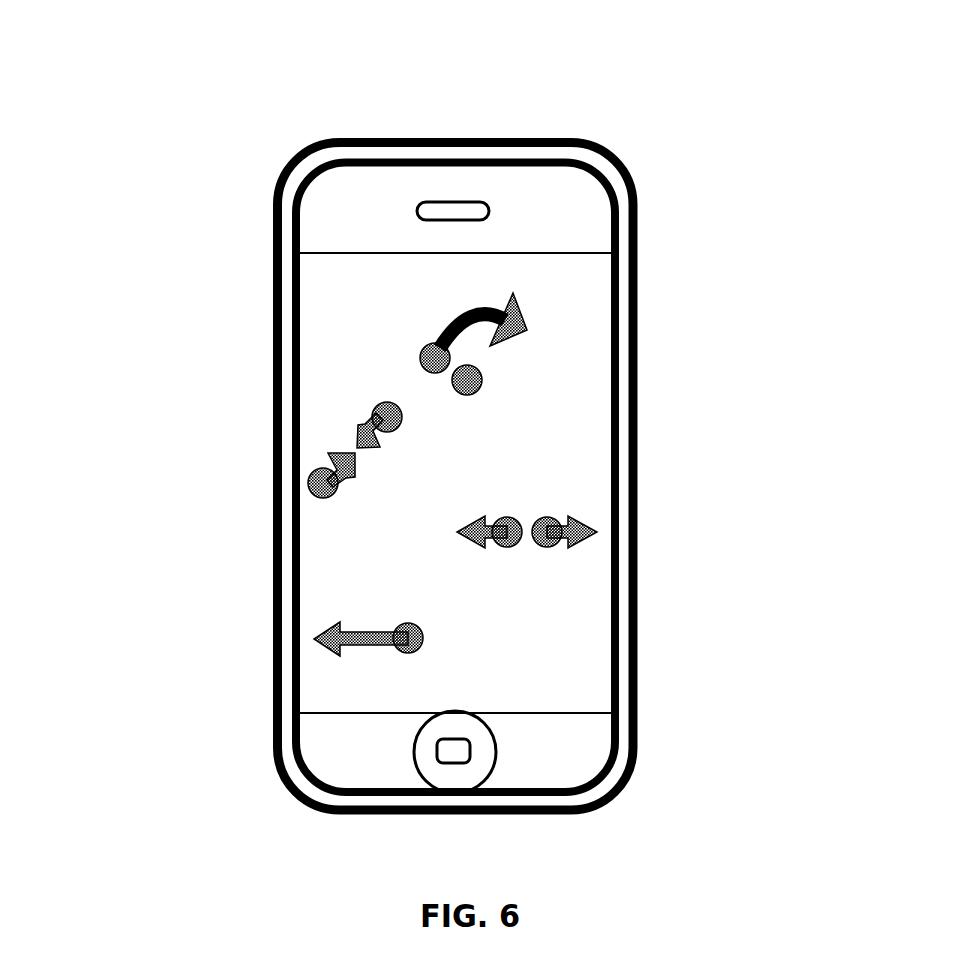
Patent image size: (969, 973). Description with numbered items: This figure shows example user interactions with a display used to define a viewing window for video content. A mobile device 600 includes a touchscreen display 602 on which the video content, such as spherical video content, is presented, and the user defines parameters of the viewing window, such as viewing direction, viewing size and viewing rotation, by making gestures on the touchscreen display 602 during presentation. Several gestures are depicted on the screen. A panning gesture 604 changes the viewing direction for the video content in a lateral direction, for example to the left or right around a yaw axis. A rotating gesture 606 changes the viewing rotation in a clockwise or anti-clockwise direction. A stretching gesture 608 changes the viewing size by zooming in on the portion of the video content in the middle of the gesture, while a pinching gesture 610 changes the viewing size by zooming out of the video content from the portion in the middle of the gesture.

The mobile device 600 is at (567, 43).
The touchscreen display 602 is at (330, 297).
The panning gesture 604 is at (350, 636).
The rotating gesture 606 is at (480, 378).
The stretching gesture 608 is at (587, 527).
The pinching gesture 610 is at (320, 470).